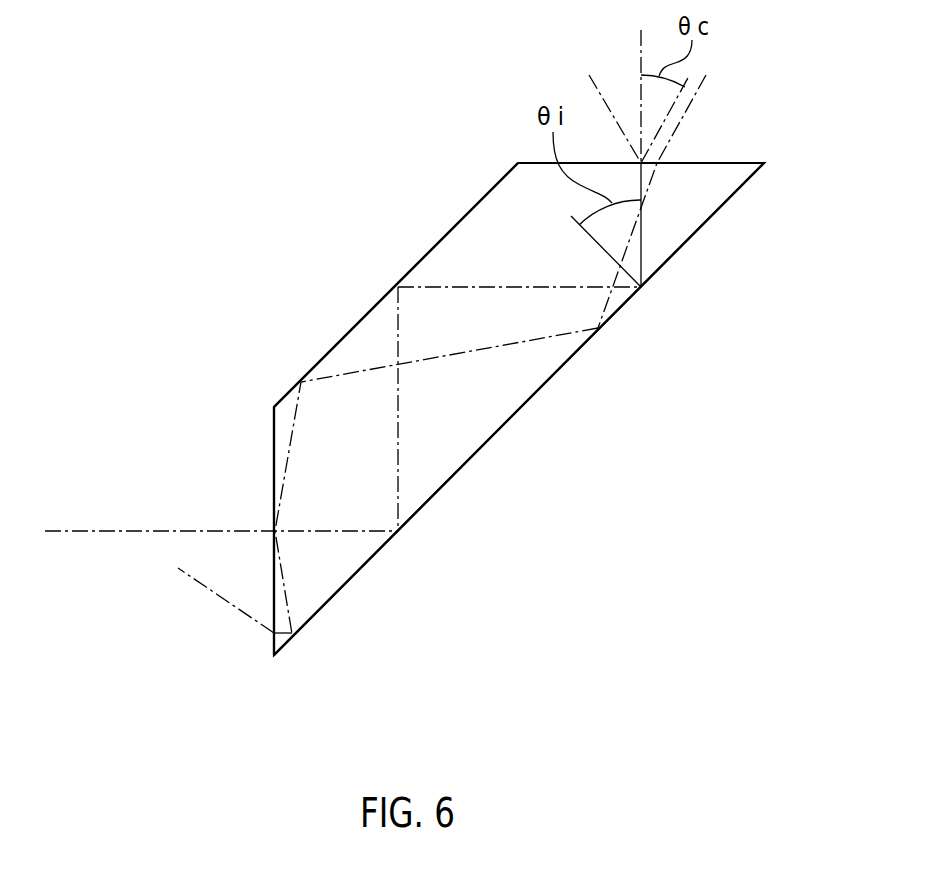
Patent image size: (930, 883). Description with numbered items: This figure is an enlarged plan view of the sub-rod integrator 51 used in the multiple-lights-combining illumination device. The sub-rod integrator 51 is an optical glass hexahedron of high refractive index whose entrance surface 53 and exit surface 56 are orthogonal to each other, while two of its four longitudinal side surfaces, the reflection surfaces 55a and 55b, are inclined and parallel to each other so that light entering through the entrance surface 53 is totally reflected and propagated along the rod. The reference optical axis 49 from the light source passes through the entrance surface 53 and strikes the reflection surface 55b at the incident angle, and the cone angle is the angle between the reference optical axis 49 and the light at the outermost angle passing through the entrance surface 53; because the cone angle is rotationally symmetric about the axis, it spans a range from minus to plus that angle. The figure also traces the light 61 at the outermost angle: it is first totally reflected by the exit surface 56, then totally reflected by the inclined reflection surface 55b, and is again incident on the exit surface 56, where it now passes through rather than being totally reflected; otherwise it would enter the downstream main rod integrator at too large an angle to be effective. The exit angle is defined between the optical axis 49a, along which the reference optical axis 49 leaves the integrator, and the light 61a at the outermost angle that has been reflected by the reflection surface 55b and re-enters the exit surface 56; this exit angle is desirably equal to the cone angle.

The reference optical axis 49 is at (640, 43).
The optical axis 49a is at (88, 530).
The sub-rod integrator 51 is at (698, 210).
The entrance surface 53 is at (735, 163).
The reflection surface 55a is at (444, 238).
The reflection surface 55b is at (583, 345).
The exit surface 56 is at (273, 482).
The light at the outermost angle 61 is at (290, 430).
The light at the outermost angle 61a is at (282, 641).